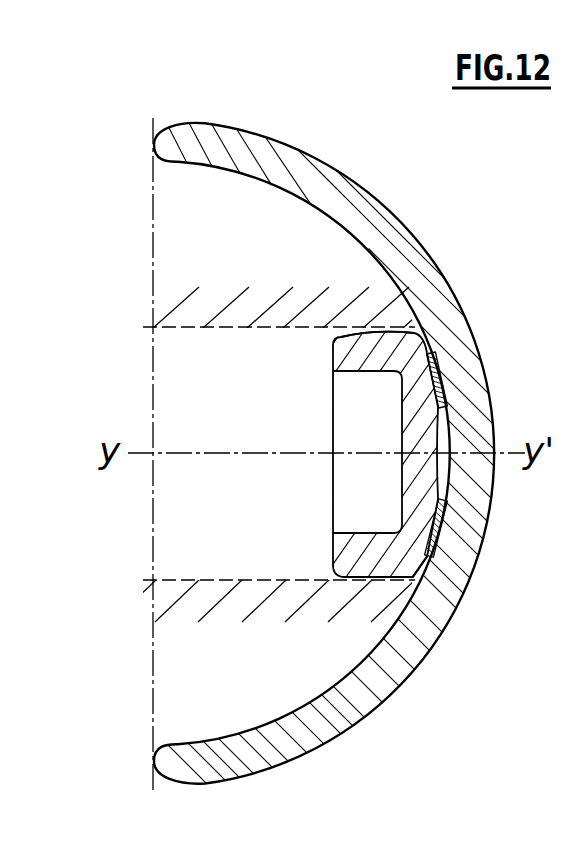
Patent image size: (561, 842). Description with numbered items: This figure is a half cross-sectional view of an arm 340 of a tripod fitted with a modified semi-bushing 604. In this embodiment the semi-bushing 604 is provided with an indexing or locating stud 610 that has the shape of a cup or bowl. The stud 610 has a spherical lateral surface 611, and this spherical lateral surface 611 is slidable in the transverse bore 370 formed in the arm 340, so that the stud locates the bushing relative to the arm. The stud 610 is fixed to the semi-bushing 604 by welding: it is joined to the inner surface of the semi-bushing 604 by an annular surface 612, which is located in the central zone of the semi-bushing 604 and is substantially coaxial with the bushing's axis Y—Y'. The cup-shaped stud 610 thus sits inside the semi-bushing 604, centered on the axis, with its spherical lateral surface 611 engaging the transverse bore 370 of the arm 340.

The semi-bushing 604 is at (386, 201).
The spherical lateral surface 611 is at (374, 326).
The indexing or locating stud 610 is at (384, 357).
The annular surface 612 is at (444, 372).
The transverse bore 370 is at (289, 328).
The arm 340 is at (179, 676).